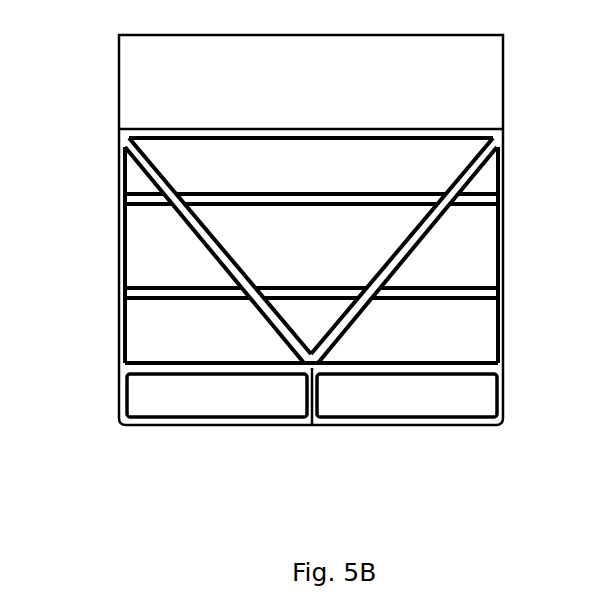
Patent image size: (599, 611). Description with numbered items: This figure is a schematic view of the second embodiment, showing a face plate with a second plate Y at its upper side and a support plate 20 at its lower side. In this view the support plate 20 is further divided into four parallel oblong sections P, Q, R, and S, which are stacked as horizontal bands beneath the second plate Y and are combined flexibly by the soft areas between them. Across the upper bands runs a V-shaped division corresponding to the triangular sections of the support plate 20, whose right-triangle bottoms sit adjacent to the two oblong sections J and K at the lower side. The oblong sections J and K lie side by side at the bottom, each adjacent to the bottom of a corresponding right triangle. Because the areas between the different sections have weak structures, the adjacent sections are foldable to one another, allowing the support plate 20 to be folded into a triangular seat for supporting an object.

The support plate 20 is at (118, 280).
The second plate Y is at (190, 99).
The oblong section P is at (496, 172).
The oblong section Q is at (487, 262).
The oblong section R is at (497, 337).
The oblong section S is at (345, 425).
The oblong section K is at (263, 412).
The oblong section J is at (393, 408).